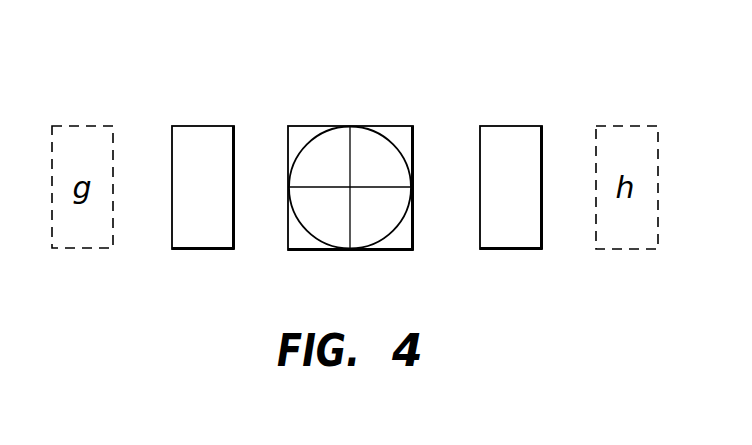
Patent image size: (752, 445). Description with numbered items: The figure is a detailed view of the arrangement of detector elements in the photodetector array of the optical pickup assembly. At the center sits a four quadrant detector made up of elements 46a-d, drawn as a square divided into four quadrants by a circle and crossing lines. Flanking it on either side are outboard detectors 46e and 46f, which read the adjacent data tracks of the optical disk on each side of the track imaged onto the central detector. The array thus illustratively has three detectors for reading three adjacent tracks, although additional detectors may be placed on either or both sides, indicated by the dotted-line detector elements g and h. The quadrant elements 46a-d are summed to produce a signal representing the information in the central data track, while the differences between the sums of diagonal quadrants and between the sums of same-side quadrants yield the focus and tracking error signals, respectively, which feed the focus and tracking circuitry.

The outboard detector 46e is at (192, 125).
The four quadrant detector elements 46a-d is at (415, 116).
The outboard detector 46f is at (520, 125).